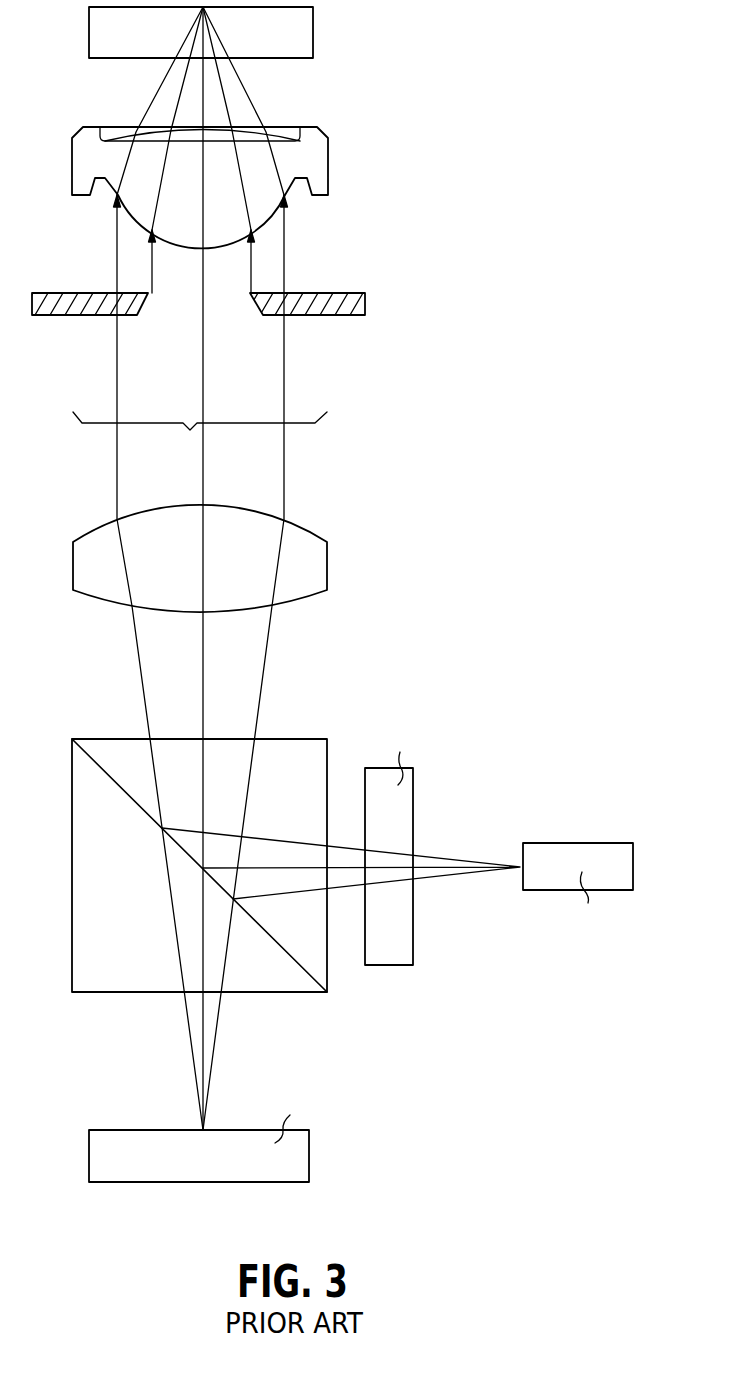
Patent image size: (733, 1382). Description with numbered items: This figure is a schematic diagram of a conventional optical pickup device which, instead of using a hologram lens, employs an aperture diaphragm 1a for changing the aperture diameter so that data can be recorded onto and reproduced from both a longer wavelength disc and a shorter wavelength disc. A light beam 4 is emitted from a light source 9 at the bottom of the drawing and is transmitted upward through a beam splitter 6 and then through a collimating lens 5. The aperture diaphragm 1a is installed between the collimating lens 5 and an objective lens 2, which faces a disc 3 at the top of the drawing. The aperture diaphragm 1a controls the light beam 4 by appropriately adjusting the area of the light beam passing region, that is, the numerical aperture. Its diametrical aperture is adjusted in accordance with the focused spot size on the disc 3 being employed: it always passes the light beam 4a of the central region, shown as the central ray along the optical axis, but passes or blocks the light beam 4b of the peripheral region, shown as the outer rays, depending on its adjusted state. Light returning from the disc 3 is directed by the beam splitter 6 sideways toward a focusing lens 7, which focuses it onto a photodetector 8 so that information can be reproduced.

The aperture diaphragm 1a is at (356, 293).
The objective lens 2 is at (77, 156).
The disc 3 is at (305, 29).
The light beam 4 is at (200, 435).
The light beam of the central region 4a is at (203, 393).
The light beam of the peripheral region 4b is at (118, 393).
The collimating lens 5 is at (327, 568).
The beam splitter 6 is at (83, 882).
The focusing lens 7 is at (398, 967).
The photodetector 8 is at (582, 843).
The light source 9 is at (309, 1160).